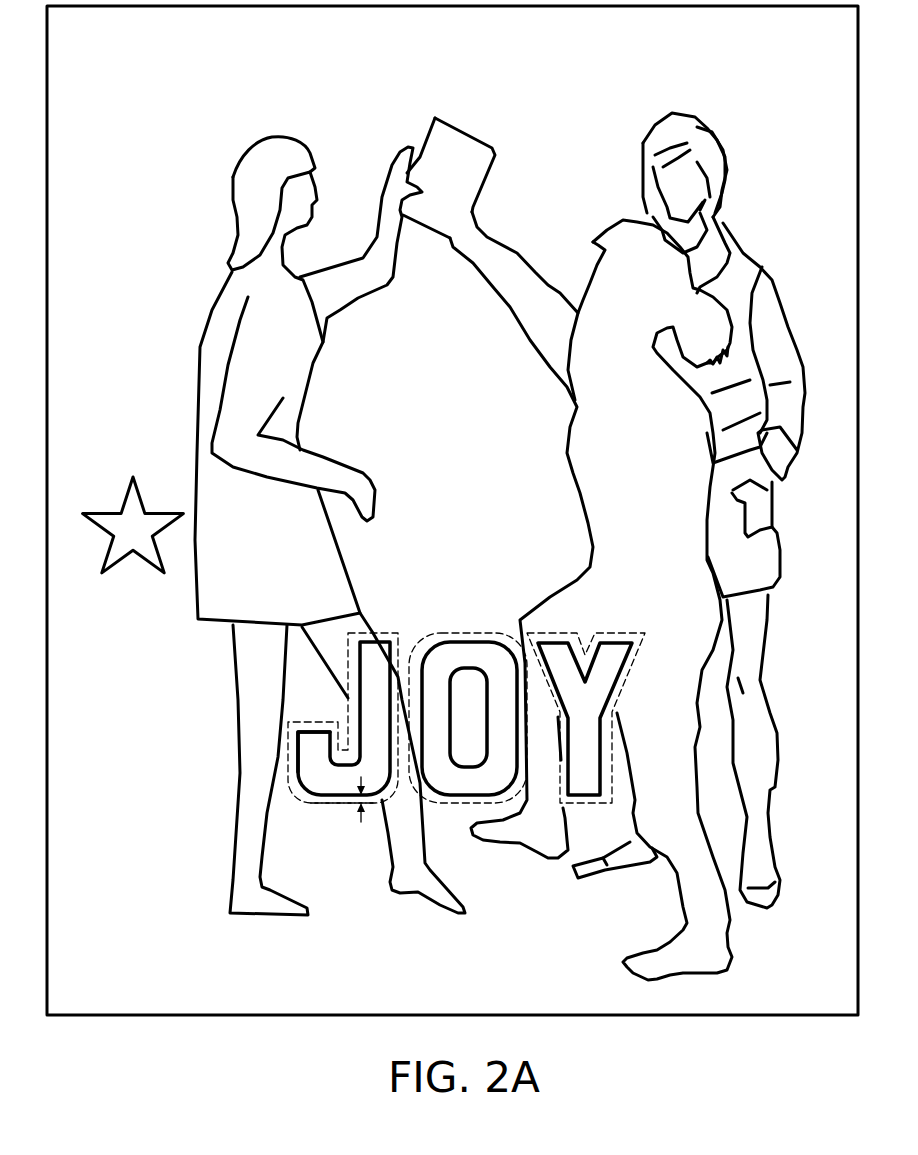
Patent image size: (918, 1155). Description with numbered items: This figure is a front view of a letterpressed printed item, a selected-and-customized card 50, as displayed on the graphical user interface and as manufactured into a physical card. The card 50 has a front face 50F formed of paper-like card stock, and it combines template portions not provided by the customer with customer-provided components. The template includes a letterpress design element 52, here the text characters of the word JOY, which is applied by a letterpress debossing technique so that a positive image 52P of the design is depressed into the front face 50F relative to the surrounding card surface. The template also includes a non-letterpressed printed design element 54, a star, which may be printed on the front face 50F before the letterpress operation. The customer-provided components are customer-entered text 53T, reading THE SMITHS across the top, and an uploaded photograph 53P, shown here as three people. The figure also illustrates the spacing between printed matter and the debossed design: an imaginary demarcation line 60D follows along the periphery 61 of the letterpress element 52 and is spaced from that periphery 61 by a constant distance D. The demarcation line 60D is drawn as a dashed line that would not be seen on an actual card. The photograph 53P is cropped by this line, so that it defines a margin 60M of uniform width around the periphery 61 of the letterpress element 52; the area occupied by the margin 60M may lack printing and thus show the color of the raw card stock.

The card 50 is at (452, 510).
The front face 50F is at (211, 981).
The letterpress design element 52 is at (308, 745).
The positive image 52P is at (308, 754).
The customer-entered text 53T is at (173, 80).
The uploaded photograph 53P is at (228, 320).
The printed design element 54 is at (133, 553).
The demarcation line 60D is at (315, 803).
The margin 60M is at (333, 808).
The periphery 61 is at (293, 792).
The constant distance D is at (362, 811).